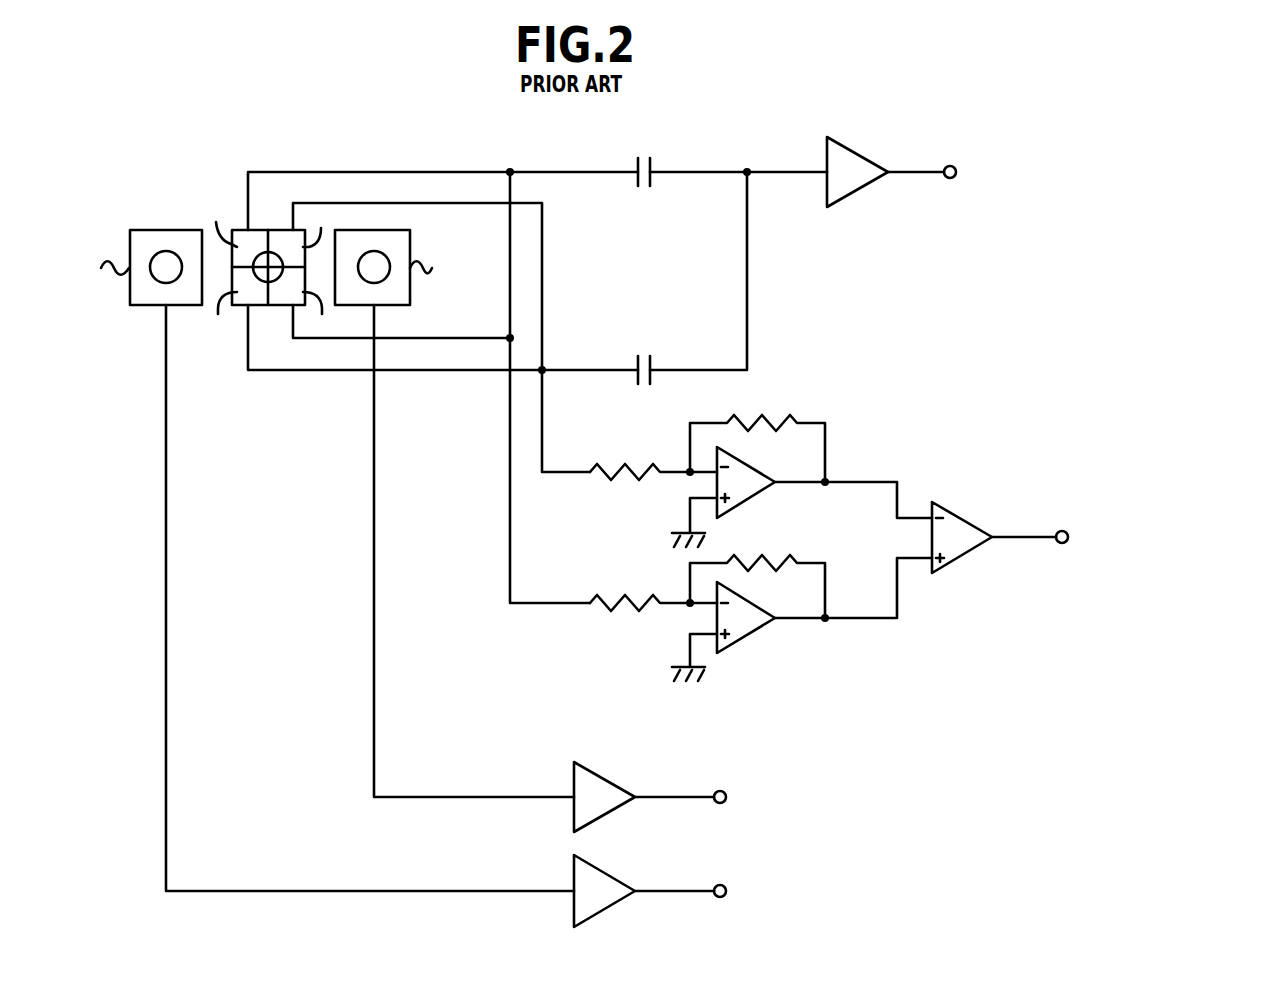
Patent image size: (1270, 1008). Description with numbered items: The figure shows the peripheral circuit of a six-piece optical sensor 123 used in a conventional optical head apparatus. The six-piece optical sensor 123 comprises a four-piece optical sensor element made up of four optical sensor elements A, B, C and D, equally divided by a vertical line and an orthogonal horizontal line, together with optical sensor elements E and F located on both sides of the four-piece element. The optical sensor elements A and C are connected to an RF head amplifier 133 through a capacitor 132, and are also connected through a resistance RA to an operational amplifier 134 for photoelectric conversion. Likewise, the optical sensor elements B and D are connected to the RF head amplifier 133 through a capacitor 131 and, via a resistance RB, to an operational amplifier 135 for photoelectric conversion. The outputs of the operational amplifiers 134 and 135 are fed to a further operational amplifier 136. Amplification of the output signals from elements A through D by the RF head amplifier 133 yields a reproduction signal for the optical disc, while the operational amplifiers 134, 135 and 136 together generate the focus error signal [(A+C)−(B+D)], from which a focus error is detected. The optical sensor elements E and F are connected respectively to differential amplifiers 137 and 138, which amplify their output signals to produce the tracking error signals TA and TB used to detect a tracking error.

The six-piece optical sensor 123 is at (428, 150).
The capacitor 131 is at (647, 157).
The capacitor 132 is at (647, 357).
The RF head amplifier 133 is at (856, 161).
The operational amplifier 134 is at (760, 490).
The operational amplifier 135 is at (745, 633).
The operational amplifier 136 is at (965, 552).
The differential amplifier 137 is at (612, 781).
The differential amplifier 138 is at (612, 874).